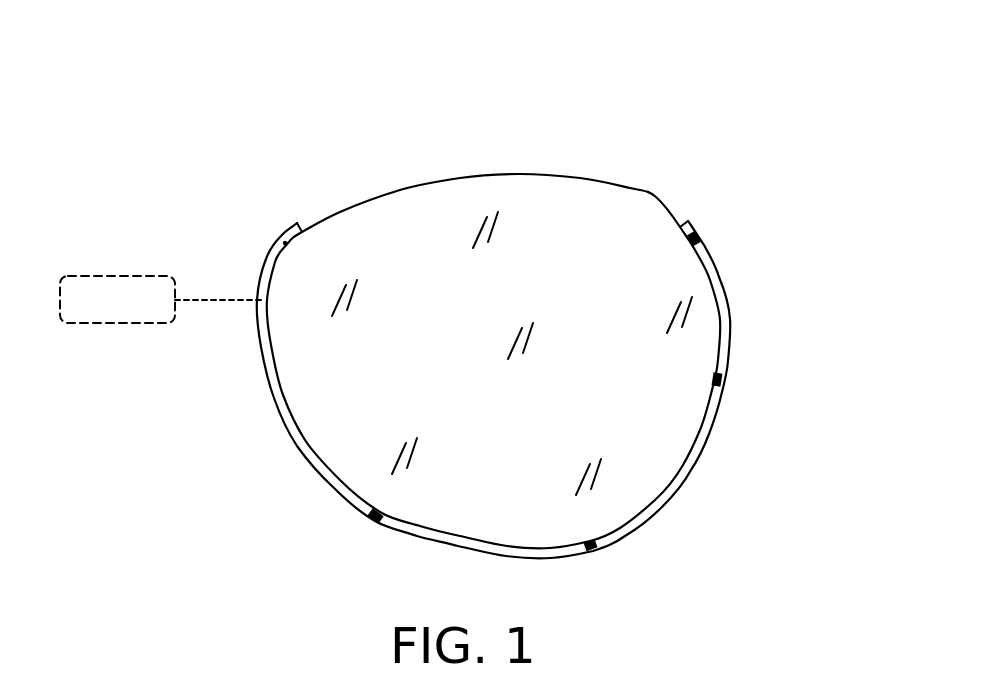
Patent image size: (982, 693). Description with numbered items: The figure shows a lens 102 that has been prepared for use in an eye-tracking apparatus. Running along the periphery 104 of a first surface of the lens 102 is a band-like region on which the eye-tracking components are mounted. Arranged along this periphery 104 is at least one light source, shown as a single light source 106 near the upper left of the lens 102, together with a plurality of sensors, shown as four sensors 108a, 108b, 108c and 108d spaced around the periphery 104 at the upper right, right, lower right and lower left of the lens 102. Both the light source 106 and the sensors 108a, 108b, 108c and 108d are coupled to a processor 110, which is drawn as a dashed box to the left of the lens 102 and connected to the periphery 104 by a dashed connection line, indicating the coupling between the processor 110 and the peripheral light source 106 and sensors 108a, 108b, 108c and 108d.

The lens 102 is at (584, 222).
The periphery 104 is at (655, 197).
The light source 106 is at (278, 223).
The sensor 108a is at (700, 237).
The sensor 108b is at (720, 377).
The sensor 108c is at (597, 549).
The sensor 108d is at (373, 513).
The processor 110 is at (112, 288).